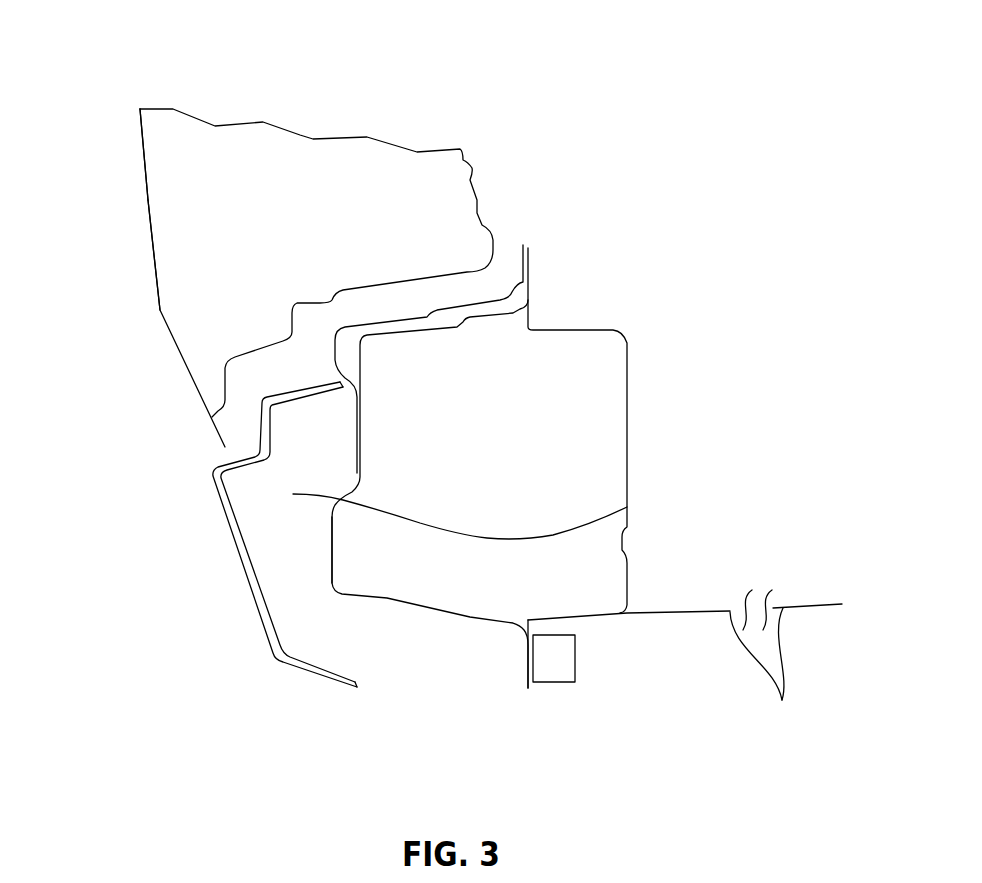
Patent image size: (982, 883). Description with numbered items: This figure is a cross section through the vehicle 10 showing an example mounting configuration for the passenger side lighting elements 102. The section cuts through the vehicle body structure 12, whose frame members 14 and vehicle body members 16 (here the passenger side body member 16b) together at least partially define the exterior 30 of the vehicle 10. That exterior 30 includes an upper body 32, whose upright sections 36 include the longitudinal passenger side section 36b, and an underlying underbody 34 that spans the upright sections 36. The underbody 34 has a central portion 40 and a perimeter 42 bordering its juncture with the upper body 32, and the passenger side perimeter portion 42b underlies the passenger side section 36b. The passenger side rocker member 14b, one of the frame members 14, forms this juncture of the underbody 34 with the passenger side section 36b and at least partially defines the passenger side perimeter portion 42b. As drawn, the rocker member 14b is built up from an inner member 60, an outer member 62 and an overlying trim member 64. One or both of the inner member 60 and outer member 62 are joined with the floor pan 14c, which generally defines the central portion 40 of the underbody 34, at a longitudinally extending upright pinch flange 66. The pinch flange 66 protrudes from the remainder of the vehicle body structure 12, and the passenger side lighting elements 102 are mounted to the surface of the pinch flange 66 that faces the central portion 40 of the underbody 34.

The vehicle 10 is at (183, 87).
The vehicle body structure 12 is at (83, 207).
The frame members 14 is at (462, 554).
The passenger side rocker member 14b is at (224, 534).
The floor pan 14c is at (781, 667).
The vehicle body members 16 is at (288, 278).
The outer panel section 16b is at (288, 278).
The exterior 30 is at (133, 126).
The upper body 32 is at (136, 171).
The underbody 34 is at (385, 698).
The upright sections 36 is at (288, 278).
The passenger side section 36b is at (153, 245).
The central portion 40 is at (792, 615).
The perimeter 42 is at (629, 627).
The passenger side perimeter portion 42b is at (629, 627).
The inner member 60 is at (293, 494).
The outer member 62 is at (332, 547).
The trim member 64 is at (178, 473).
The pinch flange 66 is at (527, 653).
The passenger side lighting elements 102 is at (553, 682).